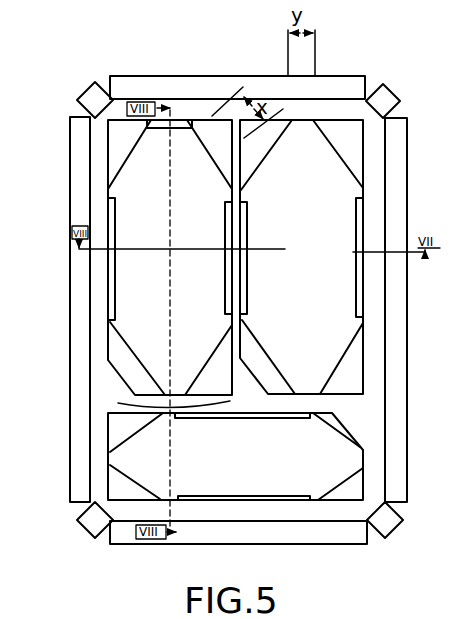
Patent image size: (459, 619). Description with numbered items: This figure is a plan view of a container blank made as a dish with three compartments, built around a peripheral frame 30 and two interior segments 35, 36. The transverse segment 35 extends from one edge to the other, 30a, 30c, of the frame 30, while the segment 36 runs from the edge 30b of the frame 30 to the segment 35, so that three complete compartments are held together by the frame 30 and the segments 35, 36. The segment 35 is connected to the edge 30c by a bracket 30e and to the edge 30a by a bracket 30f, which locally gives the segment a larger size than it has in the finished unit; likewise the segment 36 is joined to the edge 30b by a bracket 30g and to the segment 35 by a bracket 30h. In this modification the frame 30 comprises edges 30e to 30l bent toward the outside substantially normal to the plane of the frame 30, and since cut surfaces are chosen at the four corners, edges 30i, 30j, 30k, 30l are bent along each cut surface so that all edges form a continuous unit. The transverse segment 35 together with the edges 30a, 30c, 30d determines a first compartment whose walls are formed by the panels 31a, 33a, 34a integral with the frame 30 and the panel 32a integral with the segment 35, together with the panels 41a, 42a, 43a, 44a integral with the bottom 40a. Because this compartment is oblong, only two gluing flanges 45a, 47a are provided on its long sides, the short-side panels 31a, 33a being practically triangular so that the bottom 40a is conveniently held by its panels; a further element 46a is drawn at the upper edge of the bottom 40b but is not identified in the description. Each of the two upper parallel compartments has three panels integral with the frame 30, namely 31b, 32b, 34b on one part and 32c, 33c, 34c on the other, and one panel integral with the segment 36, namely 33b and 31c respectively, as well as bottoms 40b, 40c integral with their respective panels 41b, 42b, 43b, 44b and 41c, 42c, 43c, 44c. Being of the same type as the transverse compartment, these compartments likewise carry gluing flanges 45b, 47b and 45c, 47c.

The frame 30 is at (88, 202).
The frame edge 30a is at (102, 272).
The frame edge 30b is at (176, 110).
The frame edge 30c is at (372, 232).
The frame edge 30d is at (224, 527).
The bracket 30e is at (82, 220).
The bracket 30f is at (320, 87).
The bracket 30g is at (222, 123).
The bracket 30h is at (224, 420).
The corner edge 30i is at (90, 100).
The corner edge 30j is at (385, 105).
The corner edge 30k is at (392, 530).
The corner edge 30l is at (90, 530).
The bottom 40a is at (290, 468).
The bottom 40b is at (156, 238).
The bottom 40c is at (330, 220).
The bottom panel 41a is at (126, 490).
The bottom panel 41b is at (122, 147).
The bottom panel 41c is at (266, 164).
The bottom panel 42a is at (118, 427).
The bottom panel 42b is at (216, 155).
The bottom panel 42c is at (342, 146).
The bottom panel 43a is at (335, 428).
The bottom panel 43b is at (211, 383).
The bottom panel 43c is at (348, 363).
The bottom panel 44a is at (340, 497).
The bottom panel 44b is at (128, 347).
The bottom panel 44c is at (263, 371).
The frame panel 31a is at (113, 483).
The frame panel 31b is at (125, 300).
The segment panel 31c is at (248, 199).
The segment panel 32a is at (170, 416).
The frame panel 32b is at (135, 122).
The frame panel 32c is at (344, 129).
The frame panel 33a is at (360, 486).
The segment panel 33b is at (224, 198).
The frame panel 33c is at (357, 320).
The frame panel 34a is at (281, 494).
The frame panel 34b is at (146, 393).
The frame panel 34c is at (320, 391).
The transverse segment 35 is at (156, 395).
The interior segment 36 is at (233, 323).
The gluing flange 45a is at (193, 499).
The gluing flange 45b is at (112, 284).
The gluing flange 45c is at (248, 288).
The tab 46a is at (168, 123).
The gluing flange 47a is at (248, 396).
The gluing flange 47b is at (232, 249).
The gluing flange 47c is at (357, 273).